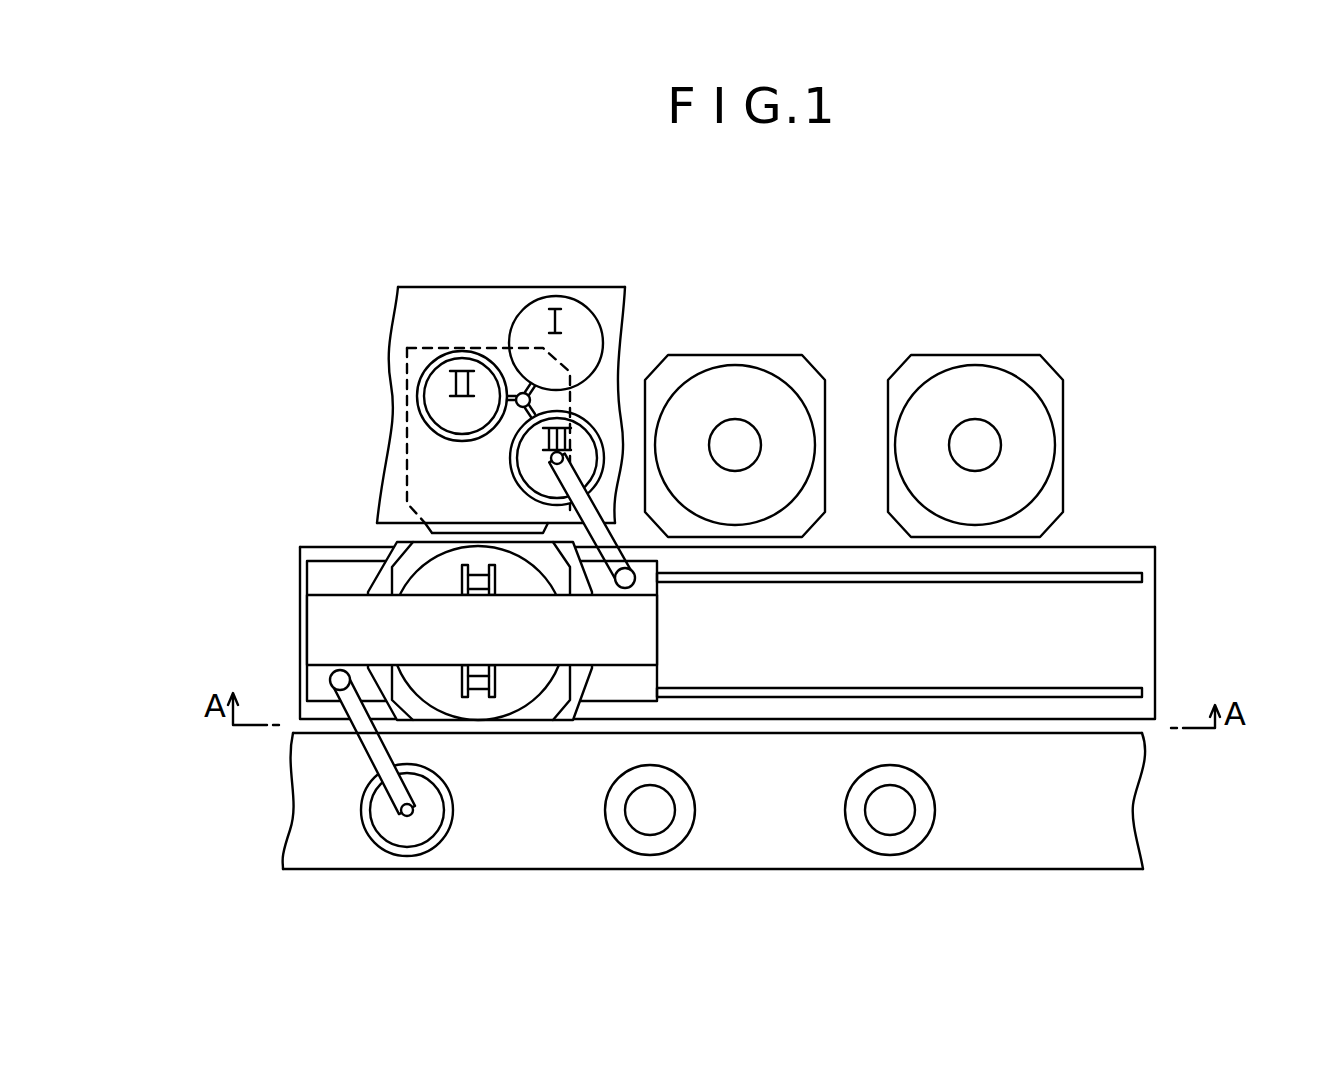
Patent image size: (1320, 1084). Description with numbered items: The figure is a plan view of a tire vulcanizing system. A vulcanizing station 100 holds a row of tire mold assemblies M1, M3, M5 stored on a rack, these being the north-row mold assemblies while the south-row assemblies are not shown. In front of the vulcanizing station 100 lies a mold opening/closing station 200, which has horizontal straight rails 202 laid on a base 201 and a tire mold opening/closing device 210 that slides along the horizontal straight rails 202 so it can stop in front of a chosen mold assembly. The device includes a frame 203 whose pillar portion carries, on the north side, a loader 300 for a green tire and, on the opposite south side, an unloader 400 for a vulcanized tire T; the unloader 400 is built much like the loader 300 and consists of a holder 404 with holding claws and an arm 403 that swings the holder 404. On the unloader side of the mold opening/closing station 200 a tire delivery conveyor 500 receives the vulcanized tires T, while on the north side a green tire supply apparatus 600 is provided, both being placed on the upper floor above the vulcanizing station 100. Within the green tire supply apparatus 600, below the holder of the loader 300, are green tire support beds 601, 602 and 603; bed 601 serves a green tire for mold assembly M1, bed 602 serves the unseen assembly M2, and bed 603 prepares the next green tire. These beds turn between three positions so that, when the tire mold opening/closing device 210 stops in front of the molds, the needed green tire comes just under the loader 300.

The vulcanizing station 100 is at (1080, 404).
The mold opening/closing station 200 is at (1177, 602).
The base 201 is at (1105, 546).
The horizontal straight rails 202 is at (978, 583).
The frame 203 is at (657, 627).
The tire mold opening/closing device 210 is at (637, 689).
The loader 300 is at (566, 507).
The unloader 400 is at (317, 688).
The arm 403 is at (358, 755).
The holder 404 is at (433, 842).
The tire delivery conveyor 500 is at (1147, 804).
The green tire supply apparatus 600 is at (463, 278).
The green tire support bed 601 is at (603, 410).
The green tire support bed 602 is at (418, 378).
The green tire support bed 603 is at (585, 307).
The tire mold assembly M1 is at (445, 347).
The tire mold assembly M3 is at (768, 362).
The tire mold assembly M5 is at (943, 355).
The vulcanized tire T is at (690, 820).